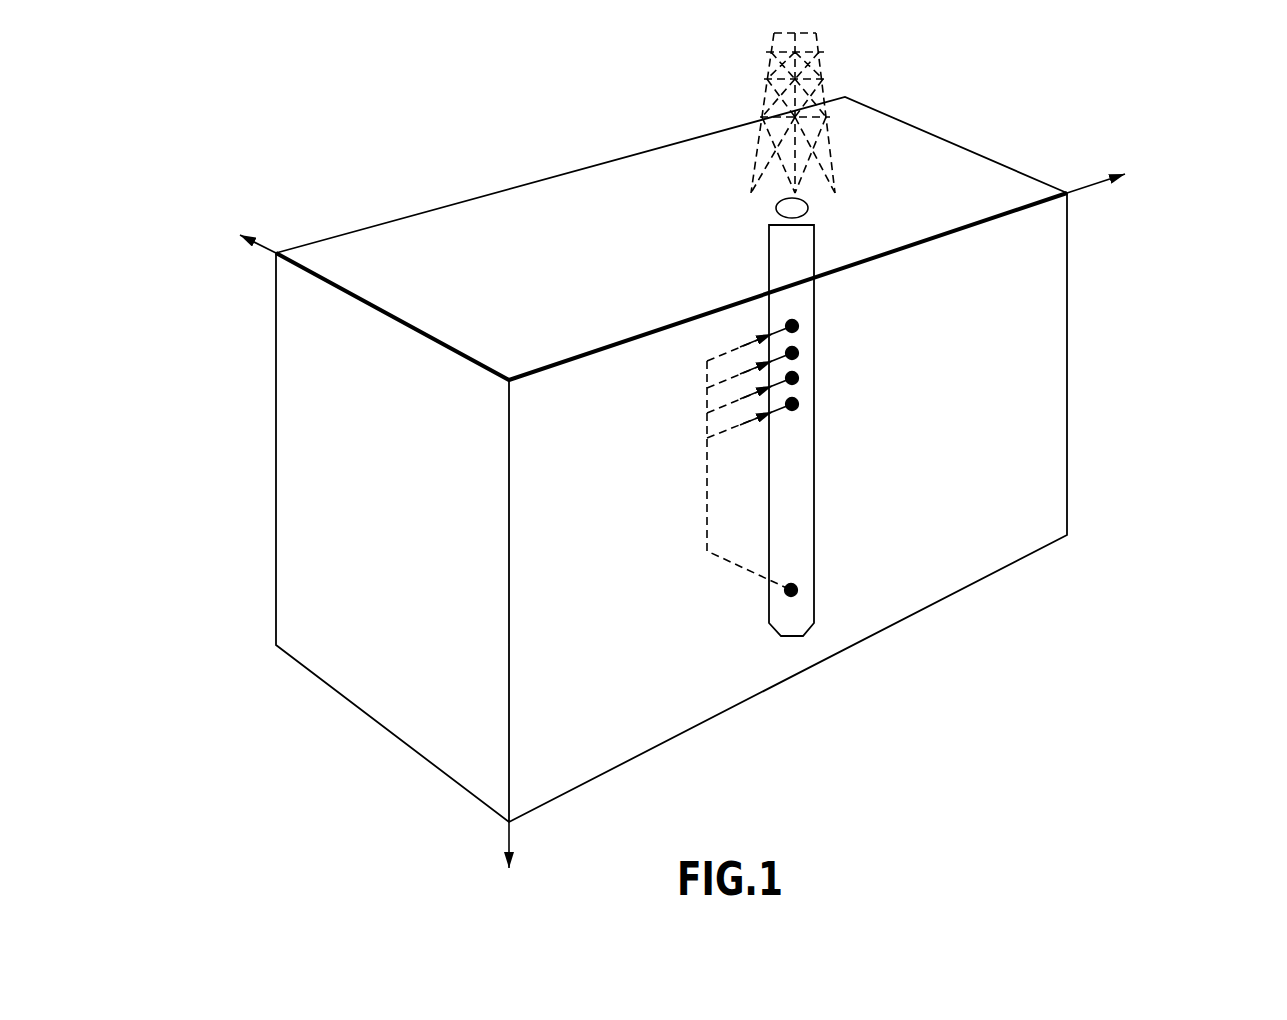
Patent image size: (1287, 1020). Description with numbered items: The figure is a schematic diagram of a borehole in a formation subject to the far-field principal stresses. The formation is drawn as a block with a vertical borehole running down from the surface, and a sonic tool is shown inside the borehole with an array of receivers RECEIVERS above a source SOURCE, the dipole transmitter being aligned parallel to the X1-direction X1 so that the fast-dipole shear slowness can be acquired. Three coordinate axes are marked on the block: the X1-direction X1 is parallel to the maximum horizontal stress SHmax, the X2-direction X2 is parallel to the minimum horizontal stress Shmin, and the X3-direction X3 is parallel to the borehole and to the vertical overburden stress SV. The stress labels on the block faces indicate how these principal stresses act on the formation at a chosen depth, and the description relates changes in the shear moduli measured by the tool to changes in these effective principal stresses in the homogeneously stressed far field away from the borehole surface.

The minimum horizontal stress Shmin is at (373, 499).
The maximum horizontal stress SHmax is at (878, 550).
The overburden stress SV is at (727, 712).
The X1-direction X1 is at (239, 237).
The X2-direction X2 is at (1105, 201).
The X3-direction X3 is at (535, 866).
The receivers in borehole RECEIVERS is at (831, 455).
The source in borehole SOURCE is at (716, 599).